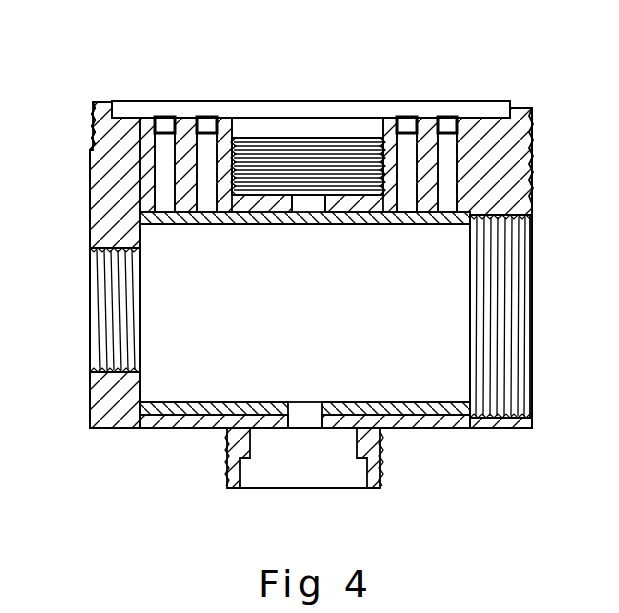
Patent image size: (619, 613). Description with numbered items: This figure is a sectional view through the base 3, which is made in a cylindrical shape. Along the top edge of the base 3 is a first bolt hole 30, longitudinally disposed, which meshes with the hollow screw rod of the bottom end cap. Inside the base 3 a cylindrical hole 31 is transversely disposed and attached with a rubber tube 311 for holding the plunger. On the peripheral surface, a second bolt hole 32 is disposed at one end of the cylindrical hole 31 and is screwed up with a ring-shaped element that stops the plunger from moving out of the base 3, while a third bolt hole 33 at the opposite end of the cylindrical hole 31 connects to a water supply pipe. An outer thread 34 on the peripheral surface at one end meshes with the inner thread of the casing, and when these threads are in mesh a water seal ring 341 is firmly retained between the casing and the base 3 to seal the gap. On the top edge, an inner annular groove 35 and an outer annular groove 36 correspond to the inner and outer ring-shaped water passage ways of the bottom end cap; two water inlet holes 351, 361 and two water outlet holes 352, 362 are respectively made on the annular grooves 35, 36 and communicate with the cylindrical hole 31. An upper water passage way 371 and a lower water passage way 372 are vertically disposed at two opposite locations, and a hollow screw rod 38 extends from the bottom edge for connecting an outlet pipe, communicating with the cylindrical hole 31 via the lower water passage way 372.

The base 3 is at (536, 195).
The first bolt hole 30 is at (238, 132).
The cylindrical hole 31 is at (408, 368).
The rubber tube 311 is at (238, 222).
The second bolt hole 32 is at (531, 229).
The third bolt hole 33 is at (100, 368).
The outer thread 34 is at (95, 120).
The water seal ring 341 is at (91, 150).
The inner annular groove 35 is at (207, 170).
The water inlet hole 351 is at (227, 120).
The water outlet hole 352 is at (387, 120).
The outer annular groove 36 is at (166, 123).
The water inlet hole 361 is at (160, 150).
The water outlet hole 362 is at (473, 157).
The upper water passage way 371 is at (295, 216).
The lower water passage way 372 is at (306, 401).
The hollow screw rod 38 is at (228, 443).